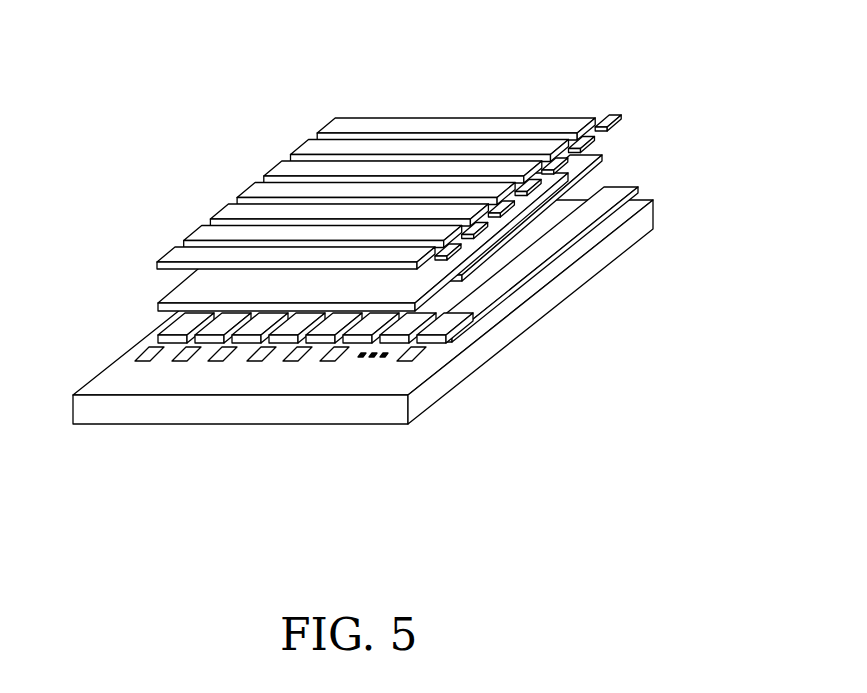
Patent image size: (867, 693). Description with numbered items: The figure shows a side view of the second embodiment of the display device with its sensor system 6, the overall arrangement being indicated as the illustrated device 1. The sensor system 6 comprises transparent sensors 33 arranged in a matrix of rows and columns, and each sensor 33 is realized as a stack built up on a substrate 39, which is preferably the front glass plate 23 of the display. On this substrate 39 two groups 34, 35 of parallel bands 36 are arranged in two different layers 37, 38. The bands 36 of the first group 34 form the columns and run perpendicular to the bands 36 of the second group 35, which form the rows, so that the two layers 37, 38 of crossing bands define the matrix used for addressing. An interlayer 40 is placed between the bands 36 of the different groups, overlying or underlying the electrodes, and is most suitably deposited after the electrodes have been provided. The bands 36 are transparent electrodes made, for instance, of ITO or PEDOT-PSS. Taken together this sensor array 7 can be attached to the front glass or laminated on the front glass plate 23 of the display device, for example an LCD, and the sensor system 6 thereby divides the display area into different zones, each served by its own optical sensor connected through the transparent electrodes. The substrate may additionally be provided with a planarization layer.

The sensor device 1 is at (383, 259).
The sensor system 6 is at (359, 143).
The sensor array 7 is at (375, 143).
The transparent sensor 33 is at (375, 143).
The first group of parallel bands 34 is at (291, 297).
The second group of parallel bands 35 is at (420, 143).
The parallel bands 36 is at (248, 327).
The first layer 37 is at (657, 162).
The second layer 38 is at (632, 103).
The substrate 39 is at (363, 350).
The front glass plate 23 is at (196, 410).
The interlayer 40 is at (600, 157).